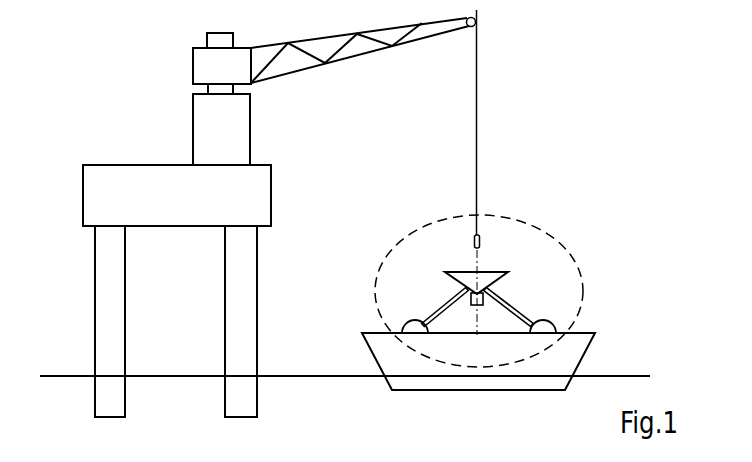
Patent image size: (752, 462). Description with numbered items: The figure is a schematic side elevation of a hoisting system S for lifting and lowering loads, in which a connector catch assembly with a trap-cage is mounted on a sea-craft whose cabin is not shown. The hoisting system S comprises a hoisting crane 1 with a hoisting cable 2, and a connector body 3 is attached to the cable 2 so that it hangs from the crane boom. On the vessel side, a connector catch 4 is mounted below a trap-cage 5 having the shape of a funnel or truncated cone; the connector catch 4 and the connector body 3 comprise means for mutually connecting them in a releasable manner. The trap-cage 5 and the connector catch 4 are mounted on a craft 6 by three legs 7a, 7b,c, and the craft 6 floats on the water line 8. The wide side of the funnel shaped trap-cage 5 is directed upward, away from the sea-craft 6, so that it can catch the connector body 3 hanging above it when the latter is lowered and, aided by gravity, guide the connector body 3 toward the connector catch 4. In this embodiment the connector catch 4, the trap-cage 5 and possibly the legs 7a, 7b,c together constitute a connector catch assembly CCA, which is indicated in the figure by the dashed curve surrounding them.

The hoisting crane 1 is at (138, 85).
The hoisting cable 2 is at (478, 152).
The connector body 3 is at (480, 240).
The connector catch 4 is at (470, 296).
The trap-cage 5 is at (463, 272).
The craft 6 is at (567, 350).
The leg 7a is at (420, 328).
The legs 7b,c is at (527, 318).
The water line 8 is at (357, 378).
The hoisting system S is at (570, 191).
The connector catch assembly CCA is at (572, 252).